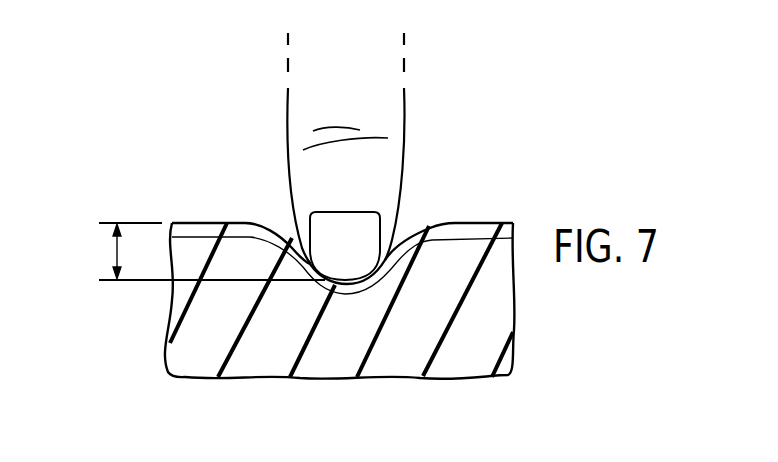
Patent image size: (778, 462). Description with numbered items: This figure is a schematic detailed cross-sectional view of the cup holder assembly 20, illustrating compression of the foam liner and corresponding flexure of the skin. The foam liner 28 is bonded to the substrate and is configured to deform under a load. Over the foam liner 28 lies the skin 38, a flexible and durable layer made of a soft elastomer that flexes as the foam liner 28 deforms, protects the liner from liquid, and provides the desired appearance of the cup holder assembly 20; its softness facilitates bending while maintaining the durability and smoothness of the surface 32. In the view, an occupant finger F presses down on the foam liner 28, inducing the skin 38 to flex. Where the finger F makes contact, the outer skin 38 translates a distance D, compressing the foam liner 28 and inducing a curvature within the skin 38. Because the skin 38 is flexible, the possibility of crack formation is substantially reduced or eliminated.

The cup holder assembly 20 is at (472, 153).
The foam liner 28 is at (207, 362).
The surface 32 is at (263, 226).
The skin 38 is at (200, 223).
The occupant finger F is at (403, 126).
The distance D is at (117, 252).